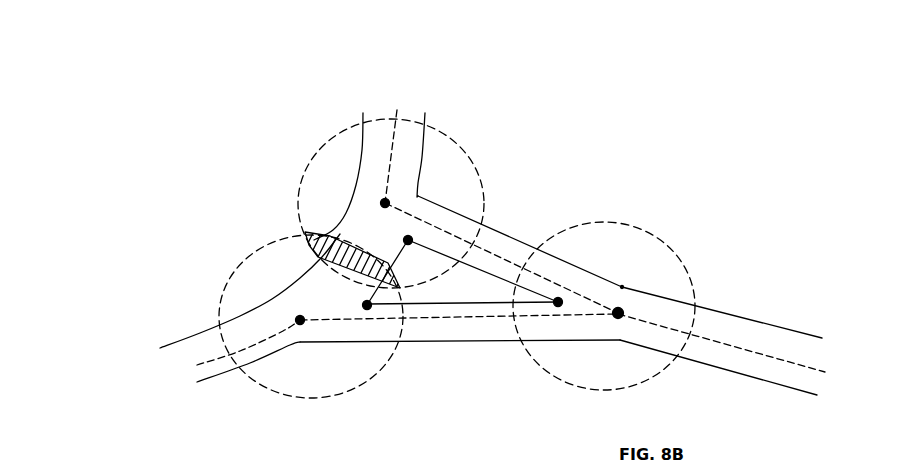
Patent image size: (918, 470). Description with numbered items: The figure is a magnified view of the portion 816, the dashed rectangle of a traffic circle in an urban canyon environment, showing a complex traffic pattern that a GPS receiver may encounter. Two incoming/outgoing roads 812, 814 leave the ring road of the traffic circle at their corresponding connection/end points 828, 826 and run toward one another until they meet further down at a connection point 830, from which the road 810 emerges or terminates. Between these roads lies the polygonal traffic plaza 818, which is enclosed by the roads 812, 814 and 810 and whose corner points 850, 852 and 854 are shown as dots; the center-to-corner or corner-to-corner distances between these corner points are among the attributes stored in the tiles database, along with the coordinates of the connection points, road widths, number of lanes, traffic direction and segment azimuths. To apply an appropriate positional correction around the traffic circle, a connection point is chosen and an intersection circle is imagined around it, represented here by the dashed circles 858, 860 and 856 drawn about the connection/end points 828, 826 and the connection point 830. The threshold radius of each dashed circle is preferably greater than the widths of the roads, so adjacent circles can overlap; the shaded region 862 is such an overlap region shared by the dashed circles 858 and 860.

The dashed rectangle portion 816 is at (103, 135).
The road 810 is at (763, 324).
The incoming/outgoing road 812 is at (497, 230).
The incoming/outgoing road 814 is at (512, 338).
The polygonal traffic plaza 818 is at (450, 287).
The connection/end point 826 is at (300, 320).
The connection/end point 828 is at (385, 203).
The connection point 830 is at (620, 313).
The corner point of traffic plaza 850 is at (558, 302).
The corner point of traffic plaza 852 is at (408, 240).
The corner point of traffic plaza 854 is at (367, 305).
The dashed intersection circle 856 is at (642, 223).
The dashed intersection circle 858 is at (437, 131).
The dashed intersection circle 860 is at (233, 264).
The shaded overlap region 862 is at (312, 234).